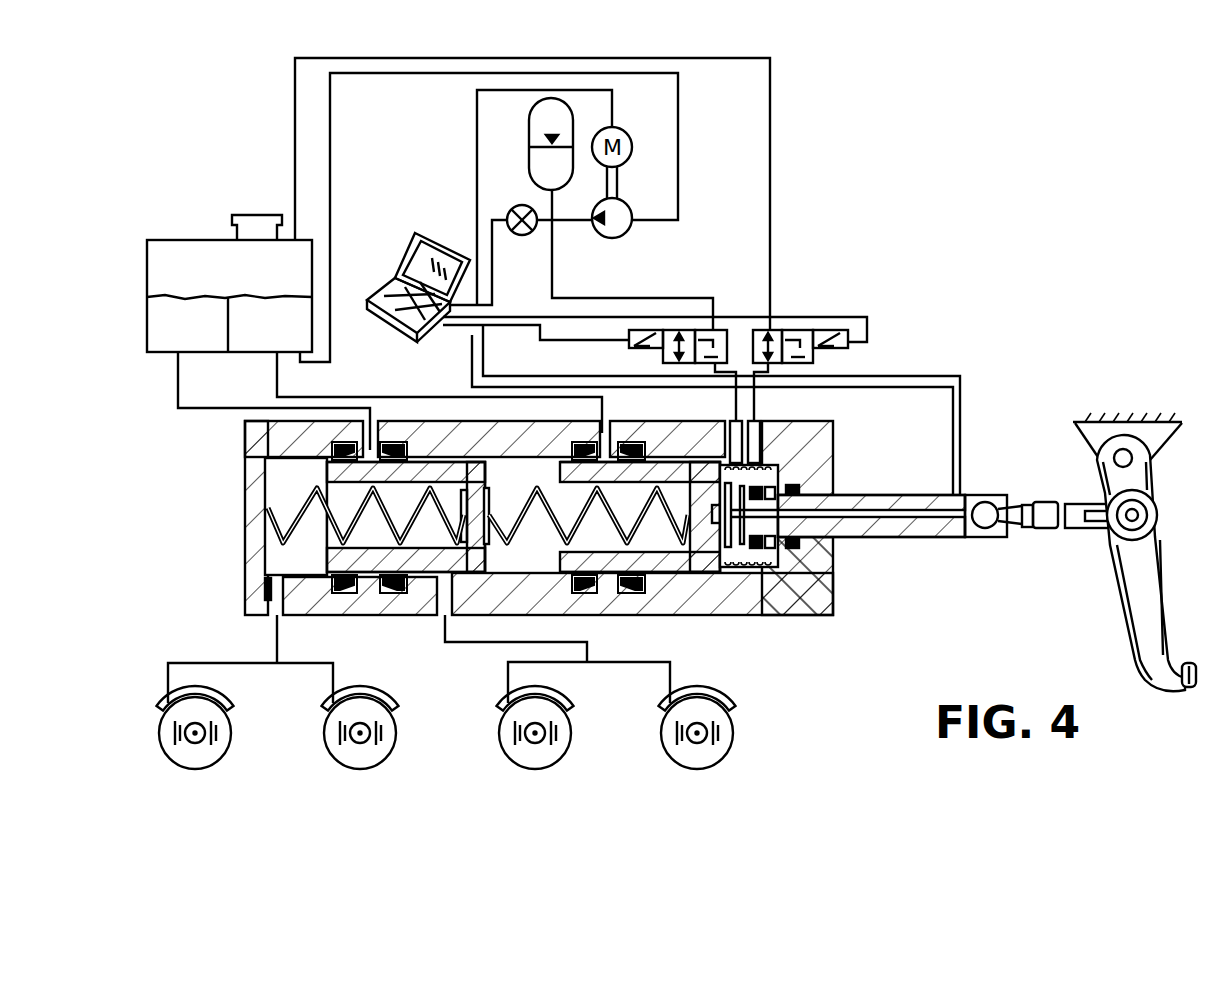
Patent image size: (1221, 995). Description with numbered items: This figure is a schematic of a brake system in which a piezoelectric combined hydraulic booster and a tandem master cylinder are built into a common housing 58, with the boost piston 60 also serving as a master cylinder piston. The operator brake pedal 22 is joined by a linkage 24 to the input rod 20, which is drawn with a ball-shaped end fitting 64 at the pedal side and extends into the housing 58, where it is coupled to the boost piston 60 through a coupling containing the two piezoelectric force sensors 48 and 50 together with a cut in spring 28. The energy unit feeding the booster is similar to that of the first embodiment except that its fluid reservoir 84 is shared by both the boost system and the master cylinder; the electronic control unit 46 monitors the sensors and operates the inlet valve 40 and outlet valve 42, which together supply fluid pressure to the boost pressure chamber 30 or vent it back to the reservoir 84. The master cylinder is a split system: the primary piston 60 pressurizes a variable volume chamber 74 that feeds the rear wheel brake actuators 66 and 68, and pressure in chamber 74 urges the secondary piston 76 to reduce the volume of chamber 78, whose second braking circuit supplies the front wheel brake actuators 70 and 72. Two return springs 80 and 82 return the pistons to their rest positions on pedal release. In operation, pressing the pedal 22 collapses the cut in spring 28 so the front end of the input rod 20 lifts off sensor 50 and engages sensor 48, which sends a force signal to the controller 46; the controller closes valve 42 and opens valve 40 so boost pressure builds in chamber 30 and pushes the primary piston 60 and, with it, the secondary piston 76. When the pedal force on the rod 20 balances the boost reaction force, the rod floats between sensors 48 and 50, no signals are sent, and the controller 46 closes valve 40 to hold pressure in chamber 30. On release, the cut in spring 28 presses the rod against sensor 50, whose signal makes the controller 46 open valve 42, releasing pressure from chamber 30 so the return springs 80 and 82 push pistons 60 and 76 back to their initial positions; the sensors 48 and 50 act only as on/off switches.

The input member 20 is at (910, 530).
The operator brake pedal 22 is at (1193, 667).
The linkage 24 is at (1070, 528).
The cut in spring 28 is at (748, 565).
The boost pressure chamber 30 is at (762, 565).
The inlet valve 40 is at (663, 358).
The outlet valve 42 is at (848, 358).
The electronic control unit 46 is at (377, 292).
The force sensor 48 is at (715, 555).
The force sensor 50 is at (790, 467).
The common housing 58 is at (250, 578).
The boost piston 60 is at (717, 523).
The ball joint 64 is at (978, 503).
The rear wheel brake actuator 66 is at (543, 753).
The rear wheel brake actuator 68 is at (703, 753).
The front wheel brake actuator 70 is at (190, 757).
The front wheel brake actuator 72 is at (363, 755).
The variable volume chamber 74 is at (542, 557).
The secondary piston 76 is at (440, 472).
The chamber 78 is at (305, 545).
The return spring 80 is at (523, 485).
The return spring 82 is at (300, 503).
The fluid reservoir 84 is at (178, 246).